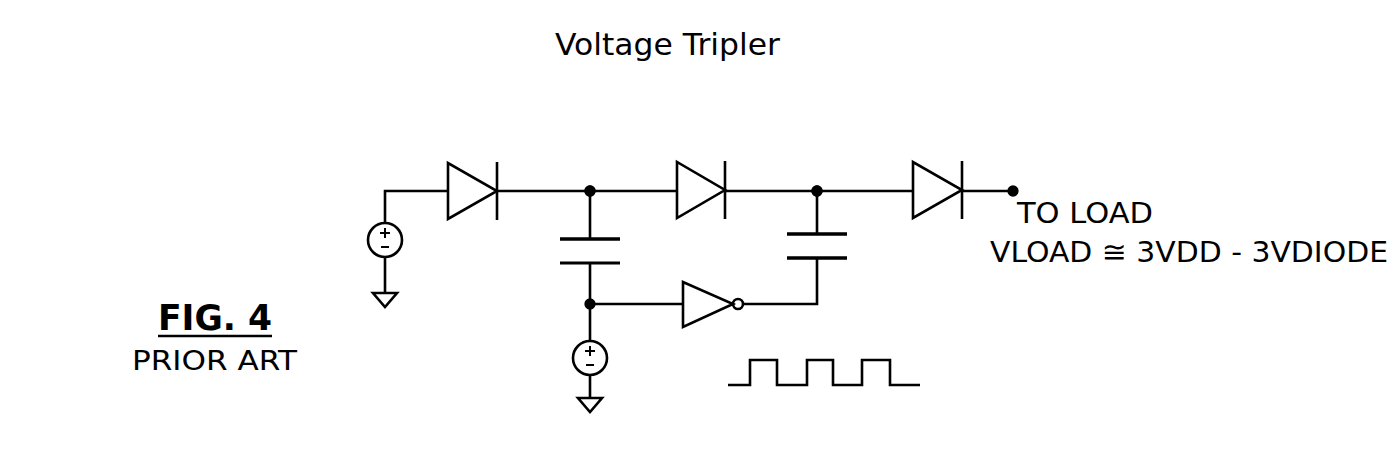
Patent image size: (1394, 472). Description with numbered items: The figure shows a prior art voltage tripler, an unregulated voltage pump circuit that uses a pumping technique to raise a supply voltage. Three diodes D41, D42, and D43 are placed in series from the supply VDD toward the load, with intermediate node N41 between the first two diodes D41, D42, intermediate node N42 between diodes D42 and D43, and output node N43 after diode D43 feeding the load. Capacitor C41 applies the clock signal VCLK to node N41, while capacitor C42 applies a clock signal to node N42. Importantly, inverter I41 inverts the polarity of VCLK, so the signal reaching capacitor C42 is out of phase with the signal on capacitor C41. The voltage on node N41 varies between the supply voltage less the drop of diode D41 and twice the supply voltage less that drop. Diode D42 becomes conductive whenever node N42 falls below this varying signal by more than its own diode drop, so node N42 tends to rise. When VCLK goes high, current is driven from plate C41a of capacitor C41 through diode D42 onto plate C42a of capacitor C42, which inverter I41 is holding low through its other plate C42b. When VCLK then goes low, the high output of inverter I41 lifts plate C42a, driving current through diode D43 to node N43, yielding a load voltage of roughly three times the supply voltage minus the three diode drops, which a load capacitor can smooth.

The diode D41 is at (470, 173).
The diode D42 is at (696, 173).
The diode D43 is at (931, 172).
The node N41 is at (593, 186).
The node N42 is at (819, 184).
The third node (output to load) N43 is at (1015, 188).
The capacitor C41 is at (620, 263).
The plate of capacitor C41 C41a is at (573, 239).
The capacitor C42 is at (798, 229).
The plate of capacitor C42 C42a is at (830, 234).
The second capacitor bottom plate C42b is at (838, 258).
The inverter I41 is at (733, 278).
The supply voltage VDD is at (341, 240).
The clock signal VCLK is at (639, 365).